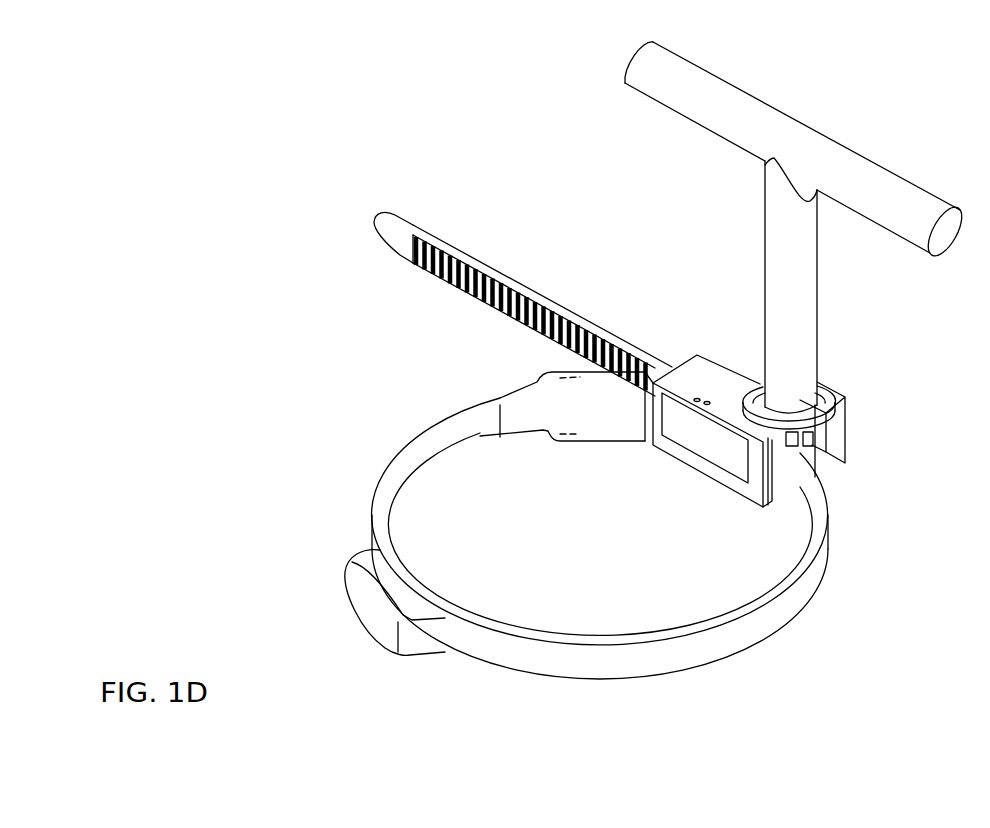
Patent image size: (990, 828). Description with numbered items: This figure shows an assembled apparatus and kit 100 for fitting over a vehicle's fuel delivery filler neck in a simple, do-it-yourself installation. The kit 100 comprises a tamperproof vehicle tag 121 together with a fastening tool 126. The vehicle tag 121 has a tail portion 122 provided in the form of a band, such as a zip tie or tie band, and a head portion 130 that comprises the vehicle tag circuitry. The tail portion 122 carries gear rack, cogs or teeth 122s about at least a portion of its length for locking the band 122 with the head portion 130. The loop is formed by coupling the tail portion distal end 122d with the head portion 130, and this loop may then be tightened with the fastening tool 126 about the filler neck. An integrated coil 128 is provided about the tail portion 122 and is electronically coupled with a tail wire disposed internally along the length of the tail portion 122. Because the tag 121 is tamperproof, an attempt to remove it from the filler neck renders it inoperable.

The apparatus and/or kit 100 is at (254, 174).
The vehicle tag 121 is at (366, 373).
The tail portion 122 is at (780, 605).
The teeth 122s is at (498, 305).
The tail portion distal end 122d is at (398, 217).
The fastening tool 126 is at (883, 208).
The integrated coil 128 is at (370, 605).
The head portion 130 is at (681, 498).